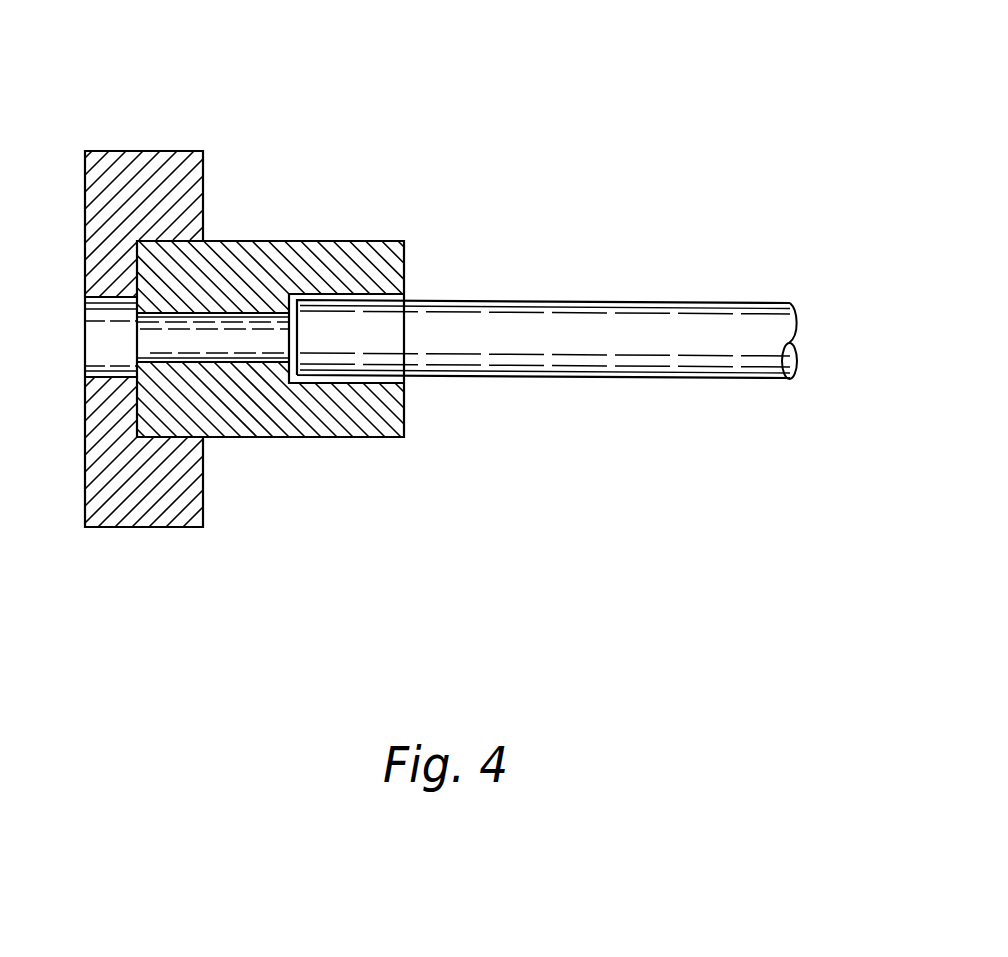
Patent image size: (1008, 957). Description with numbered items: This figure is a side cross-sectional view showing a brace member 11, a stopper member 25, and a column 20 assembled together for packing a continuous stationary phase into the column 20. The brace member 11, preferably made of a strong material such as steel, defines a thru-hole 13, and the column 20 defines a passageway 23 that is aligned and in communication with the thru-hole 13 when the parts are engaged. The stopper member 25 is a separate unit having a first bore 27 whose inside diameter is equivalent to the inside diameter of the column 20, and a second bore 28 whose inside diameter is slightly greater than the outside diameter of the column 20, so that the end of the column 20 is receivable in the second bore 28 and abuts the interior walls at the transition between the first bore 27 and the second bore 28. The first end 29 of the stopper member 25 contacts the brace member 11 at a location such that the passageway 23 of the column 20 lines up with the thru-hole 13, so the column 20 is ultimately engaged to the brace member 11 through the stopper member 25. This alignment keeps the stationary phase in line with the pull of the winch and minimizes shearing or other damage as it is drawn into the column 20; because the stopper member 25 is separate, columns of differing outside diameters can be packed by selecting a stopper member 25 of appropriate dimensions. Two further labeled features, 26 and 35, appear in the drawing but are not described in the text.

The brace member 11 is at (163, 150).
The thru-hole 13 is at (105, 355).
The column 20 is at (652, 380).
The passageway 23 is at (790, 361).
The stopper member 25 is at (372, 241).
The fitting body shoulder 26 is at (202, 240).
The first bore 27 is at (262, 305).
The second bore 28 is at (354, 384).
The first end 29 is at (168, 437).
The inner tube 35 is at (234, 363).